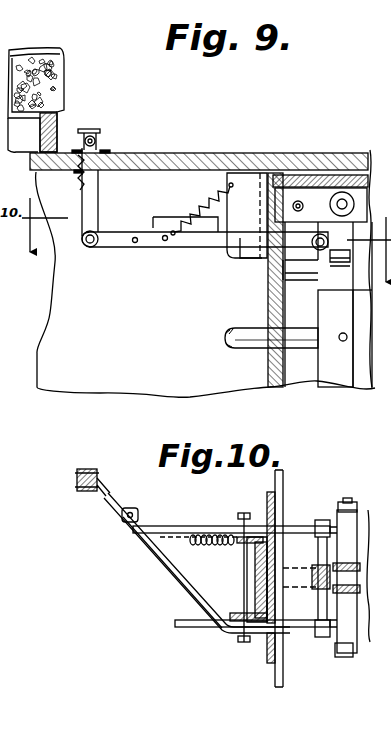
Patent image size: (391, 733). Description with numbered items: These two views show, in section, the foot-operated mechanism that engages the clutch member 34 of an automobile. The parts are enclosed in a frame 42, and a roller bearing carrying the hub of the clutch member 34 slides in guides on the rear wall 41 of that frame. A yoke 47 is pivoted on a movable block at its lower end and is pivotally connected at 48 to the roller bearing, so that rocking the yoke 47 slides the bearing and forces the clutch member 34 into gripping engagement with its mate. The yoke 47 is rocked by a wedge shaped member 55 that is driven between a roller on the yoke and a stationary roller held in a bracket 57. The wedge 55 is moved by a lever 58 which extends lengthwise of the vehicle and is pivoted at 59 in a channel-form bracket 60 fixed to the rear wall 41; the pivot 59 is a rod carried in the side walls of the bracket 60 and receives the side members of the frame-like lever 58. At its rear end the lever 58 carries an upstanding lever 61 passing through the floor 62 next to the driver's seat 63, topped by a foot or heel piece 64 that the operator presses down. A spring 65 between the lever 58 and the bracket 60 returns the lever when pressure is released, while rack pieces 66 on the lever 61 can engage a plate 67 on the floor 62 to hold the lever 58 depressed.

In FIG. 9, the clutch member 34 is at (332, 380).
In FIG. 9, the rear wall 41 is at (268, 303).
In FIG. 9, the frame 42 is at (286, 184).
In FIG. 9, the yoke 47 is at (345, 305).
In FIG. 9, the pivotal connection 48 is at (340, 340).
In FIG. 9, the wedge shaped member 55 is at (236, 334).
In FIG. 10, the wedge shaped member 55 is at (308, 575).
In FIG. 9, the bracket 57 is at (365, 190).
In FIG. 9, the lever 58 is at (189, 248).
In FIG. 10, the lever 58 is at (172, 570).
In FIG. 9, the pivot 59 is at (240, 256).
In FIG. 10, the pivot 59 is at (232, 526).
In FIG. 9, the bracket 60 is at (243, 184).
In FIG. 10, the bracket 60 is at (262, 560).
In FIG. 9, the upstanding lever 61 is at (96, 202).
In FIG. 10, the upstanding lever 61 is at (98, 478).
In FIG. 9, the floor 62 is at (165, 156).
In FIG. 9, the driver's seat 63 is at (62, 88).
In FIG. 9, the foot or heel piece 64 is at (100, 132).
In FIG. 9, the spring 65 is at (222, 186).
In FIG. 10, the spring 65 is at (205, 536).
In FIG. 9, the rack pieces 66 is at (84, 186).
In FIG. 9, the plate 67 is at (104, 152).